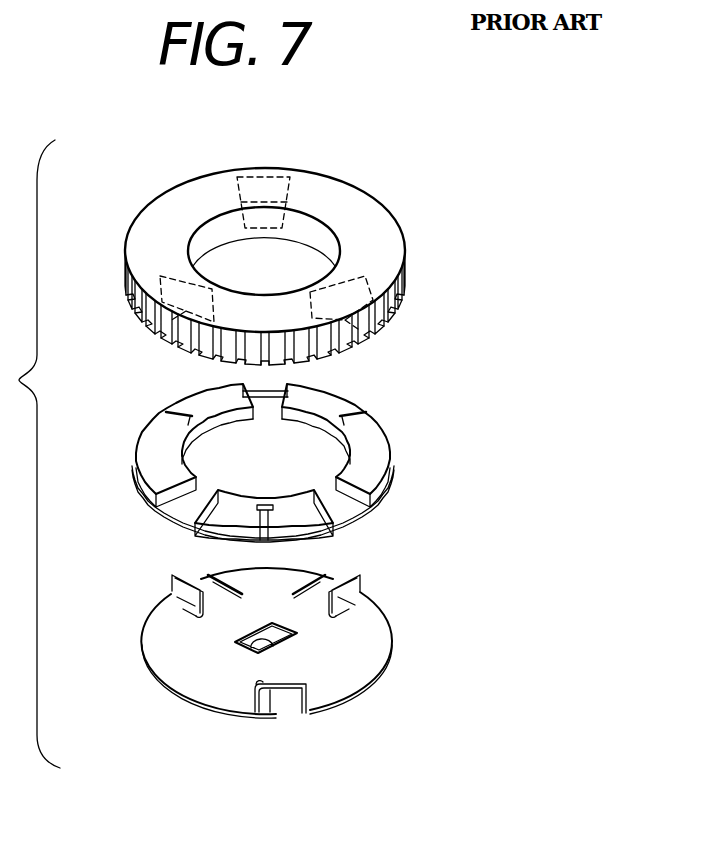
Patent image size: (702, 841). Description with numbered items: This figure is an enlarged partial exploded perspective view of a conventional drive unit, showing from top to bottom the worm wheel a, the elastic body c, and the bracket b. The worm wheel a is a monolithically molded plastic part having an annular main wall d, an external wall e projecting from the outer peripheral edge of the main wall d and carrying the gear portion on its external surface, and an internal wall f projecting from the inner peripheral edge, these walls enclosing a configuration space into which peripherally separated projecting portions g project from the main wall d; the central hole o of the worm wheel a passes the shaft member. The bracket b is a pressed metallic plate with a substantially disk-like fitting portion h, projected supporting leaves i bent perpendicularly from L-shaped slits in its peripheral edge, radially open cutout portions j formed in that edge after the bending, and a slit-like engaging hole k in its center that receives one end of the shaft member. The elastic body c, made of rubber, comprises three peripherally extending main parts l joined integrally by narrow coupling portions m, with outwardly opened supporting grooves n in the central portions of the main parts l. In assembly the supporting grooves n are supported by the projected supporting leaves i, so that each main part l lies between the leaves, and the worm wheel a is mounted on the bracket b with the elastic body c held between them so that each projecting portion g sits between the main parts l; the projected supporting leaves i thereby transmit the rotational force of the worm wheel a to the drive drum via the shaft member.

The worm wheel a is at (272, 229).
The bracket b is at (390, 627).
The elastic body c is at (383, 448).
The annular main wall d is at (380, 208).
The external wall e is at (377, 330).
The internal wall f is at (317, 230).
The projecting portions g is at (262, 176).
The fitting portion h is at (357, 672).
The projected supporting leaves i is at (178, 587).
The cutout portions j is at (313, 598).
The engaging hole k is at (262, 643).
The main parts l is at (153, 437).
The coupling portions m is at (270, 388).
The supporting grooves n is at (162, 417).
The central hole o is at (207, 247).